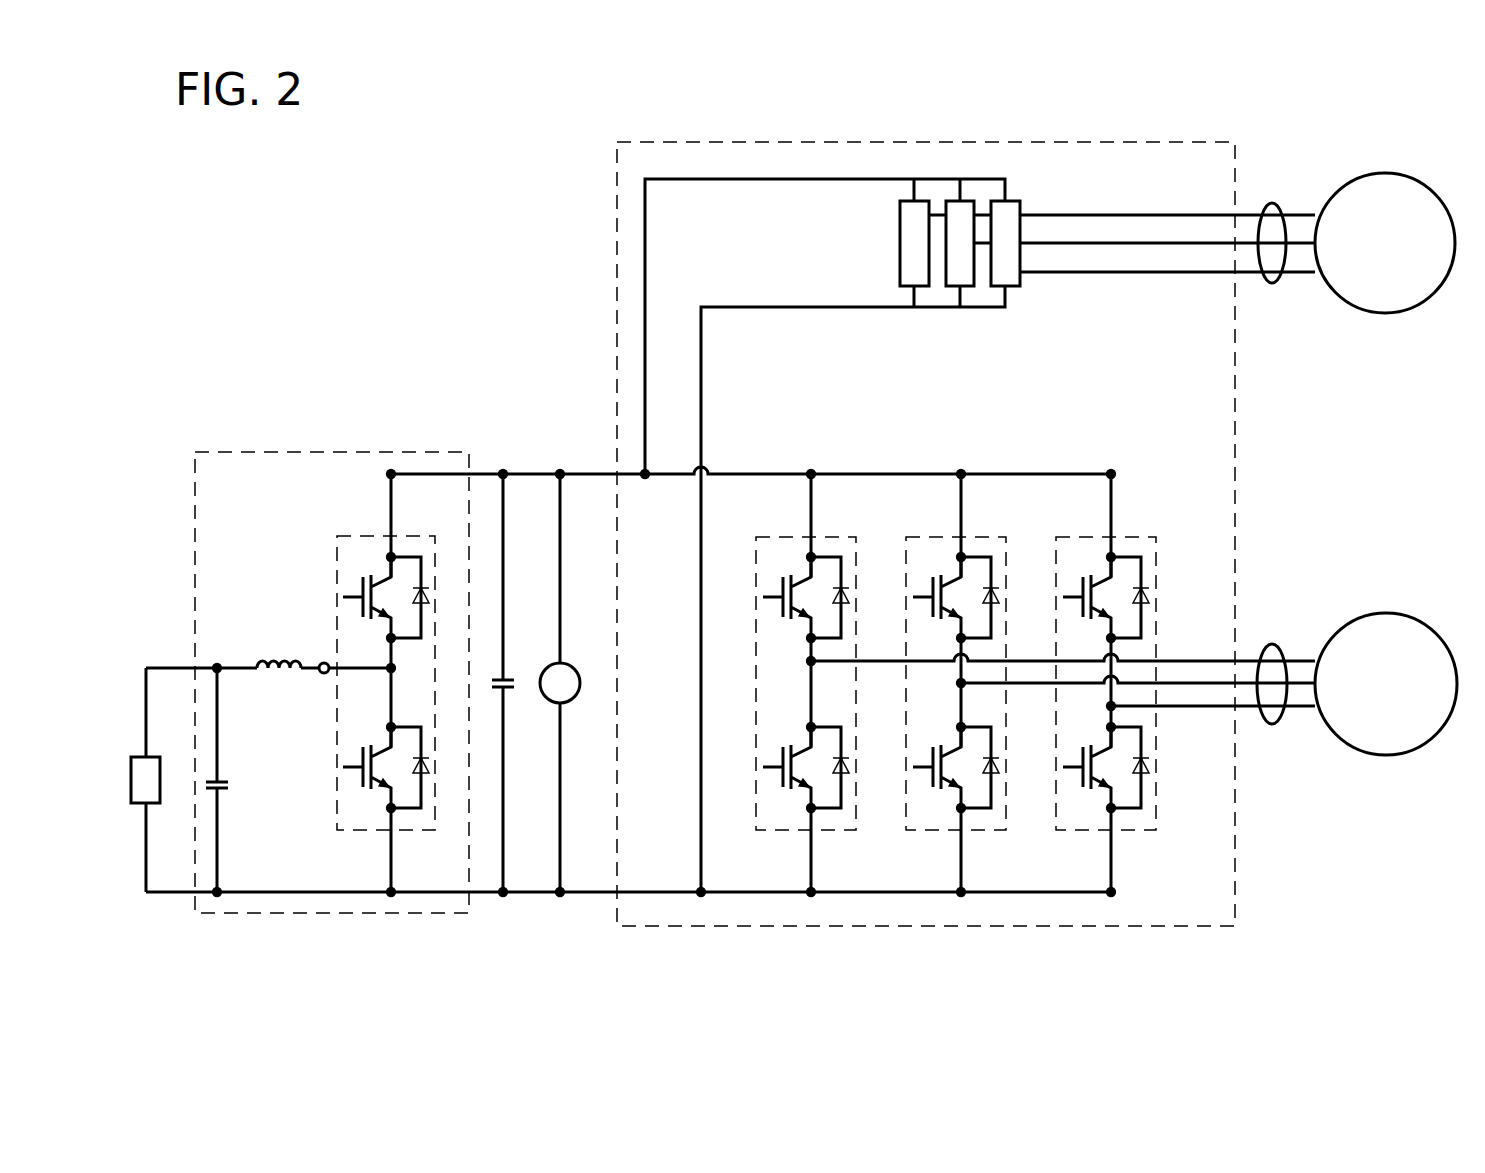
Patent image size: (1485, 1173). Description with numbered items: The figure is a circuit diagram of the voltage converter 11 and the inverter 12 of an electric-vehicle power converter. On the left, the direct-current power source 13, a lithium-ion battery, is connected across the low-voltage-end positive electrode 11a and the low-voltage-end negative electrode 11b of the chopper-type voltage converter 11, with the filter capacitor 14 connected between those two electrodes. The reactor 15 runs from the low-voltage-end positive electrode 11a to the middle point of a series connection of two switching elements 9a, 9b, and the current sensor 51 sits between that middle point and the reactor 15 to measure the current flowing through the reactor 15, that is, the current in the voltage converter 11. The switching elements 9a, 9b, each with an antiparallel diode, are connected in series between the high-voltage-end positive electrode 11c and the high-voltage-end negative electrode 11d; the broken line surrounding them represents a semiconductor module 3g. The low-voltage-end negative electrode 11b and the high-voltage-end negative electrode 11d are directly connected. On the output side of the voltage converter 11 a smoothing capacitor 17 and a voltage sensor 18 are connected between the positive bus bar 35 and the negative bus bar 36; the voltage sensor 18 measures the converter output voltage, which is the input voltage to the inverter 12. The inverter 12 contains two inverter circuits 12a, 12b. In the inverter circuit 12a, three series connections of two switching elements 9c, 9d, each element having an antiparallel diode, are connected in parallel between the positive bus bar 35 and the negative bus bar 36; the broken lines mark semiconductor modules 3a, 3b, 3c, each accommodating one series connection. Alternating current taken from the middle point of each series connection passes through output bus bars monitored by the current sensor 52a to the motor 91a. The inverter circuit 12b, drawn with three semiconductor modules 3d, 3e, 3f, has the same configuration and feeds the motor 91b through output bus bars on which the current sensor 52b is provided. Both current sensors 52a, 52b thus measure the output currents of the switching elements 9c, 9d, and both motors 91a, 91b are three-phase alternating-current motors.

The voltage converter 11 is at (262, 450).
The low-voltage-end positive electrode 11a is at (215, 666).
The low-voltage-end negative electrode 11b is at (217, 895).
The high-voltage-end positive electrode 11c is at (391, 473).
The high-voltage-end negative electrode 11d is at (390, 895).
The direct-current power source 13 is at (140, 757).
The filter capacitor 14 is at (226, 780).
The reactor 15 is at (268, 662).
The current sensor 51 is at (323, 662).
The semiconductor module 3g is at (360, 536).
The switching element 9a is at (346, 596).
The switching element 9b is at (346, 766).
The smoothing capacitor 17 is at (510, 678).
The voltage sensor 18 is at (565, 703).
The positive bus bar 35 is at (586, 472).
The negative bus bar 36 is at (575, 895).
The inverter 12 is at (1170, 140).
The inverter circuit 12a is at (792, 912).
The inverter circuit 12b is at (990, 163).
The semiconductor module 3a is at (840, 537).
The semiconductor module 3b is at (990, 537).
The semiconductor module 3c is at (1140, 537).
The semiconductor module 3d is at (909, 290).
The semiconductor module 3e is at (968, 290).
The semiconductor module 3f is at (1012, 290).
The switching element 9c is at (767, 594).
The switching element 9d is at (767, 762).
The current sensor 52a is at (1270, 645).
The current sensor 52b is at (1272, 205).
The motor 91a is at (1410, 618).
The motor 91b is at (1410, 180).